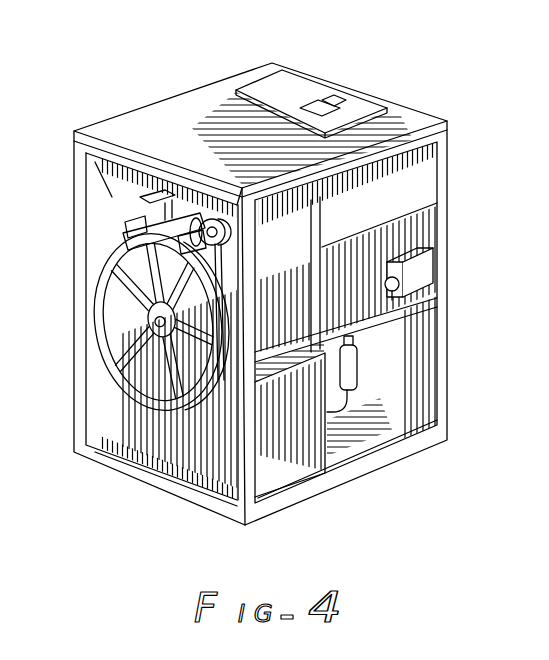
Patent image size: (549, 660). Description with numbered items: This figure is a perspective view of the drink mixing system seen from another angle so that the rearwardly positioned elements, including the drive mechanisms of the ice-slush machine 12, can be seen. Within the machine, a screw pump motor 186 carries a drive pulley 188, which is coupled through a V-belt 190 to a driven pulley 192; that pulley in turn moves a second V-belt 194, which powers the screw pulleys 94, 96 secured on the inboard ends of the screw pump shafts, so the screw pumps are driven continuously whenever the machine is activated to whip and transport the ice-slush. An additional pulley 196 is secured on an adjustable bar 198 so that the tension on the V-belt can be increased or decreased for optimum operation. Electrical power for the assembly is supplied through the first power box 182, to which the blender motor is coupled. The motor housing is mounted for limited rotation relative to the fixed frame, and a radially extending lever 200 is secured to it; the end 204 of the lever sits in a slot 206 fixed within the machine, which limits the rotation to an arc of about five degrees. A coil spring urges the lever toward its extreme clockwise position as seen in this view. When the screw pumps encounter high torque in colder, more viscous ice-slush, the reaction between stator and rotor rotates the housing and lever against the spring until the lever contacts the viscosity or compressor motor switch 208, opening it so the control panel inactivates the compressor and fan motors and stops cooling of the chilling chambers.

The ice-slush machine 12 is at (406, 101).
The pulley 94 is at (188, 210).
The pulley 96 is at (186, 398).
The first power box 182 is at (420, 305).
The screw pump motor 186 is at (243, 190).
The drive pulley 188 is at (225, 229).
The V-belt 190 is at (225, 252).
The pulley 192 is at (168, 395).
The V-belt 194 is at (148, 240).
The additional pulley 196 is at (132, 278).
The adjustable bar 198 is at (108, 320).
The lever 200 is at (172, 195).
The end of the lever 204 is at (140, 196).
The slot 206 is at (140, 195).
The viscosity or compressor motor switch 208 is at (165, 198).